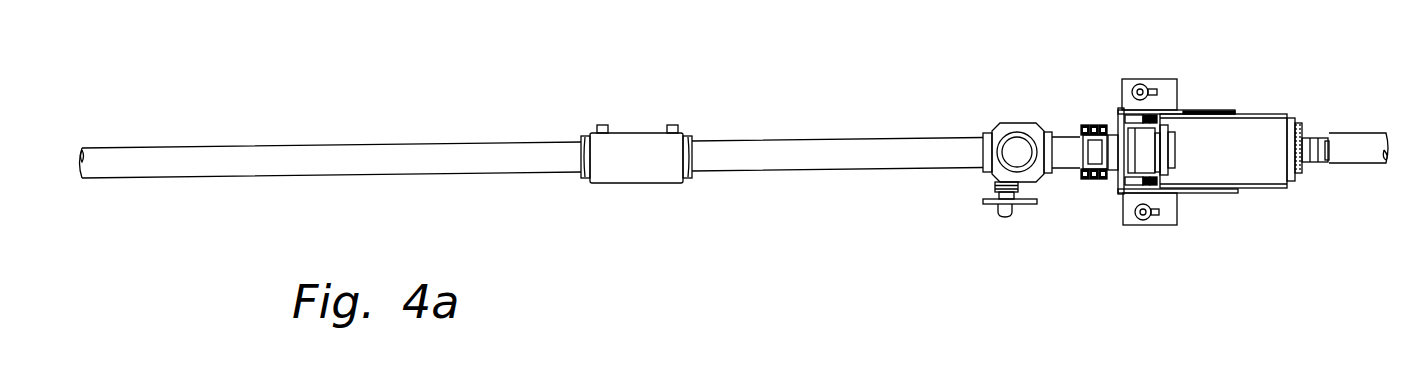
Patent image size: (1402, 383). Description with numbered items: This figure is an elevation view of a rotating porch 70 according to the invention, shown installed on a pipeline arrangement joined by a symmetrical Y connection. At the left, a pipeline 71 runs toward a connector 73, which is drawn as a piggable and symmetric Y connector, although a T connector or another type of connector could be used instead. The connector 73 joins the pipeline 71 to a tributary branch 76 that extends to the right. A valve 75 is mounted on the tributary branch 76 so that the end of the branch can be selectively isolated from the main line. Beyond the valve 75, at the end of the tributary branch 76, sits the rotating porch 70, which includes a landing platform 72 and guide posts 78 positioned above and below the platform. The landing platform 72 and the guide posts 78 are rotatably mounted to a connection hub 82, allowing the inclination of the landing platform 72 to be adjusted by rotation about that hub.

The rotating porch 70 is at (1292, 86).
The pipeline 71 is at (222, 145).
The landing platform 72 is at (1227, 112).
The connector 73 is at (643, 132).
The valve 75 is at (1018, 123).
The tributary branch 76 is at (837, 139).
The guide posts 78 is at (1150, 79).
The connection hub 82 is at (1158, 152).